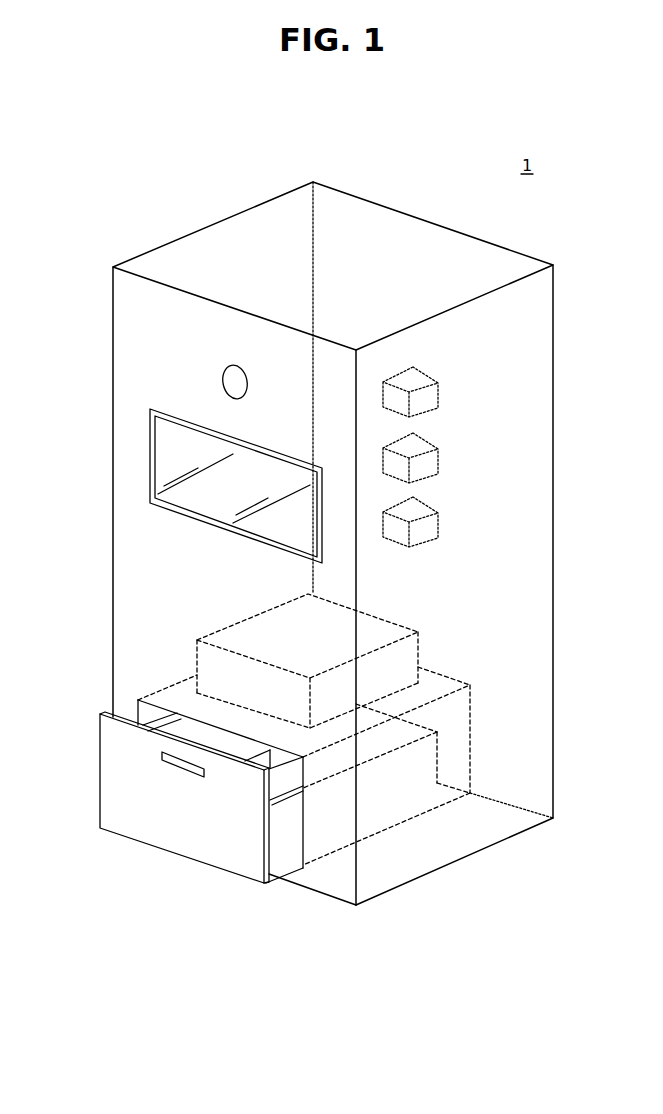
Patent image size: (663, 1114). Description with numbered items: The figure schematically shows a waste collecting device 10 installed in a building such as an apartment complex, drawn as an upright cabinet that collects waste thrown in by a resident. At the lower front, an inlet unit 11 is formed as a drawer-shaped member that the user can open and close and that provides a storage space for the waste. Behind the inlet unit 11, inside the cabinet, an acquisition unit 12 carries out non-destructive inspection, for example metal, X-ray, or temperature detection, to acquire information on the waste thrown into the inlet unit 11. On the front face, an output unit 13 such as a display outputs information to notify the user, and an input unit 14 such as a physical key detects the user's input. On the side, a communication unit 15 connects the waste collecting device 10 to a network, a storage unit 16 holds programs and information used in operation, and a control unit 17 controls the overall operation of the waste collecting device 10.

The waste collecting device 10 is at (197, 232).
The inlet unit 11 is at (110, 767).
The acquisition unit 12 is at (398, 624).
The output unit 13 is at (170, 455).
The input unit 14 is at (227, 382).
The communication unit 15 is at (440, 385).
The storage unit 16 is at (440, 451).
The control unit 17 is at (440, 515).